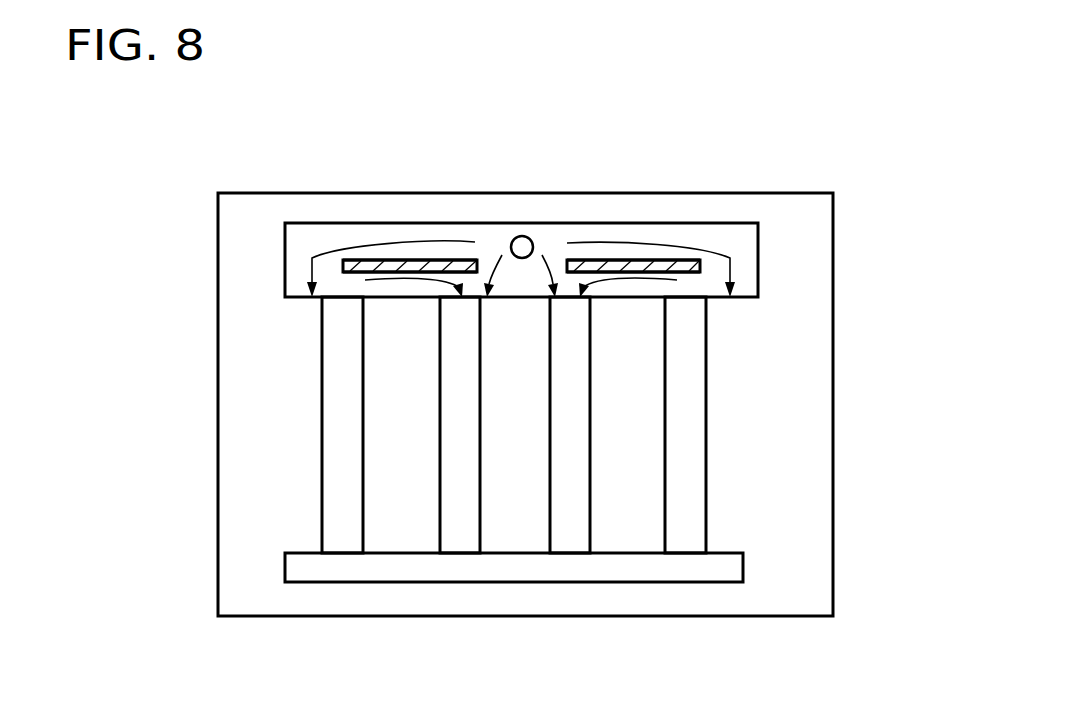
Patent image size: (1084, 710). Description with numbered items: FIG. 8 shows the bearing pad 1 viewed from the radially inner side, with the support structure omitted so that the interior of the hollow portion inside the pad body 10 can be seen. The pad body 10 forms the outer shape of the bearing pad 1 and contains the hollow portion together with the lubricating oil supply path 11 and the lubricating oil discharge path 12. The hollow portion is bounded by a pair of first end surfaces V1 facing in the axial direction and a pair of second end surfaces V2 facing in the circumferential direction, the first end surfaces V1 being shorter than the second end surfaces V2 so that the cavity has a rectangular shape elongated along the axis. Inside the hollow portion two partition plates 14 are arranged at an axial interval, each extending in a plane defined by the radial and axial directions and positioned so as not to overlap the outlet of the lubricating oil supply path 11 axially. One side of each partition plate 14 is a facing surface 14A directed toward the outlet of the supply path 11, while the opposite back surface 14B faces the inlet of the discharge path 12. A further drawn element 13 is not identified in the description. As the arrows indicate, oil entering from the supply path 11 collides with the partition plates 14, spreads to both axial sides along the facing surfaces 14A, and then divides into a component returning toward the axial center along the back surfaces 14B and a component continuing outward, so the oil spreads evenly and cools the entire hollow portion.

The bearing pad 1 is at (116, 219).
The pad body 10 is at (798, 514).
The lubricating oil supply path 11 is at (525, 236).
The lubricating oil discharge path 12 is at (336, 432).
The base plate 13 is at (412, 567).
The partition plate 14 is at (383, 260).
The facing surface 14A is at (436, 262).
The back surface 14B is at (352, 272).
The first end surface V1 is at (298, 268).
The second end surface V2 is at (469, 226).